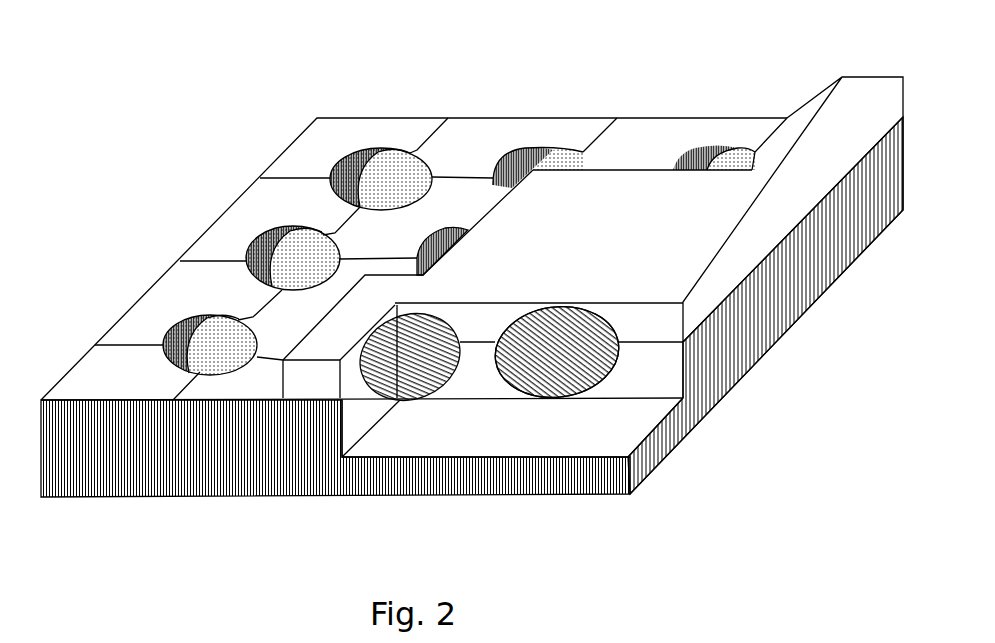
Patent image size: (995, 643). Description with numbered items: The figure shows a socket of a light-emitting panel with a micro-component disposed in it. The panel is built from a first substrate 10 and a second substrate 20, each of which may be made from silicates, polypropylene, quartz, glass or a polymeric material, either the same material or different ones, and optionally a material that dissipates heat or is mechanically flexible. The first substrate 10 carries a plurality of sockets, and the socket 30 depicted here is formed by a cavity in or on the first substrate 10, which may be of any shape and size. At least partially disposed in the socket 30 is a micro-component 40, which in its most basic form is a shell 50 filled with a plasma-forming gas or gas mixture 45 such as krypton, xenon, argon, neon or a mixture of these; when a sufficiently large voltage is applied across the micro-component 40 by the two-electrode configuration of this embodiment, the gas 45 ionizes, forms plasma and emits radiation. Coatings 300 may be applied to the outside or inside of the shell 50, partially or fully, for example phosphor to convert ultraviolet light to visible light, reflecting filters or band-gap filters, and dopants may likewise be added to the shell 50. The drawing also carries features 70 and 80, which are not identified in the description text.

The first substrate 10 is at (124, 483).
The second substrate 20 is at (860, 93).
The socket 30 is at (621, 357).
The micro-component 40 is at (363, 153).
The plasma-forming gas or gas mixture 45 is at (342, 422).
The shell 50 is at (598, 379).
The ridge 70 is at (443, 135).
The conductive trace 80 is at (203, 262).
The coatings 300 is at (603, 327).